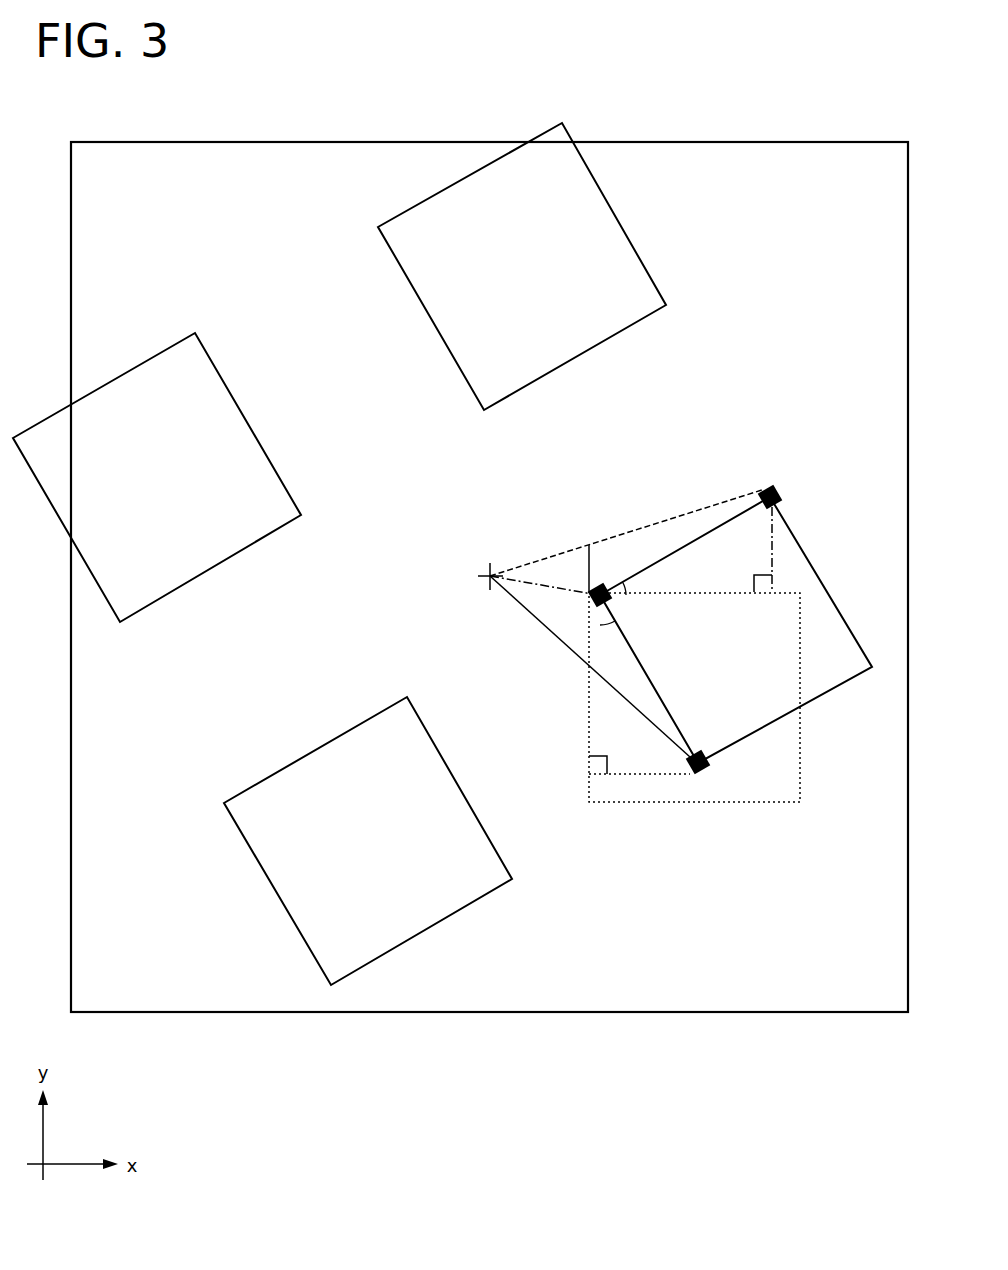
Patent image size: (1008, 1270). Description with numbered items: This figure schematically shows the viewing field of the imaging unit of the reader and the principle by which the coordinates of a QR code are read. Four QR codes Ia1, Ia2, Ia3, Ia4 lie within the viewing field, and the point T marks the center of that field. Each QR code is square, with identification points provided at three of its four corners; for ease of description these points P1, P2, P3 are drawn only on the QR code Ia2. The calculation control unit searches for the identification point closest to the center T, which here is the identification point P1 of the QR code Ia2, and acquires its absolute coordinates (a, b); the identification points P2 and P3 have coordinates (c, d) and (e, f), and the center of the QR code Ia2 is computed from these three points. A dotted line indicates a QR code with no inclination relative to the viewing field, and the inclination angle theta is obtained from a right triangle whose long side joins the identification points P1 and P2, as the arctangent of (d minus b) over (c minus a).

The QR code Ia1 is at (522, 266).
The QR code Ia2 is at (730, 649).
The QR code Ia3 is at (368, 841).
The QR code Ia4 is at (157, 477).
The center of the viewing field T is at (489, 575).
The identification point P1 is at (592, 594).
The identification point P2 is at (770, 485).
The identification point P3 is at (702, 776).